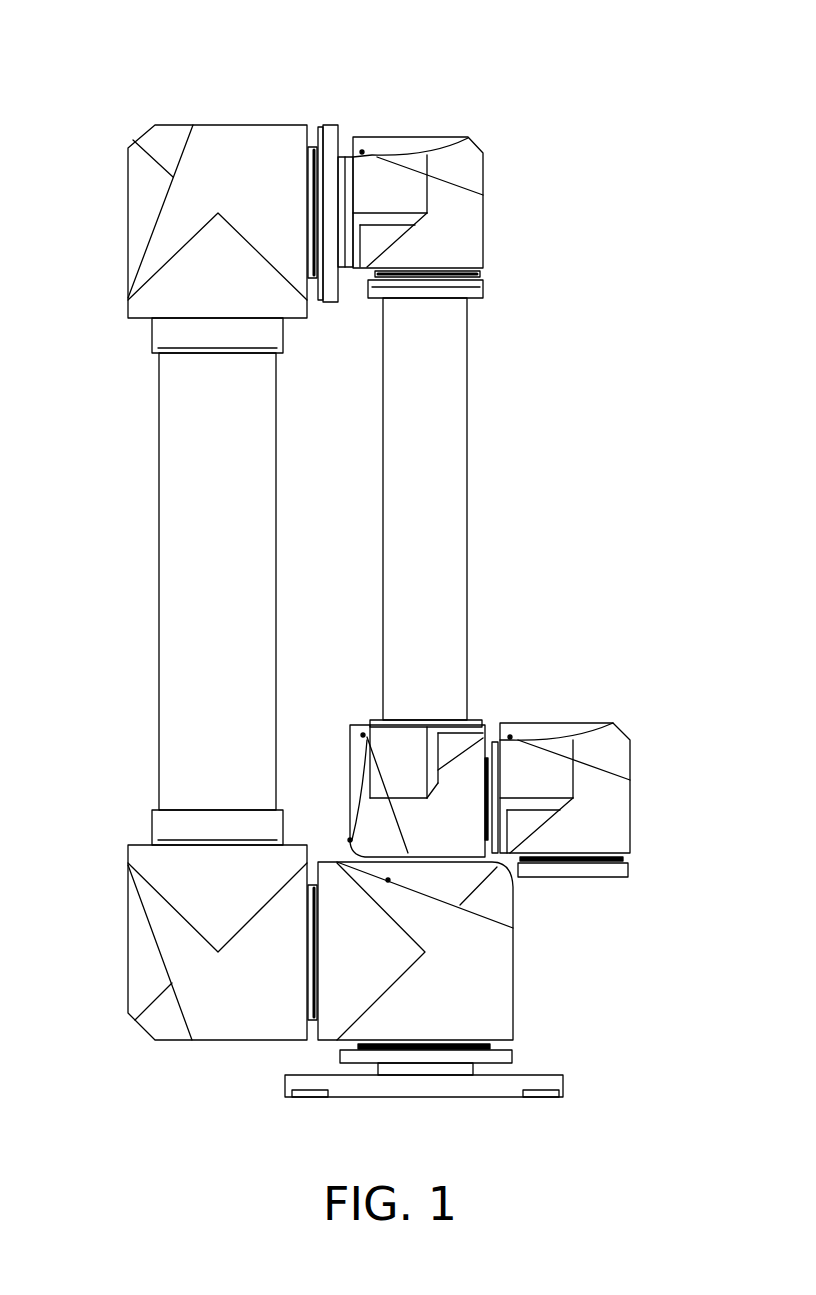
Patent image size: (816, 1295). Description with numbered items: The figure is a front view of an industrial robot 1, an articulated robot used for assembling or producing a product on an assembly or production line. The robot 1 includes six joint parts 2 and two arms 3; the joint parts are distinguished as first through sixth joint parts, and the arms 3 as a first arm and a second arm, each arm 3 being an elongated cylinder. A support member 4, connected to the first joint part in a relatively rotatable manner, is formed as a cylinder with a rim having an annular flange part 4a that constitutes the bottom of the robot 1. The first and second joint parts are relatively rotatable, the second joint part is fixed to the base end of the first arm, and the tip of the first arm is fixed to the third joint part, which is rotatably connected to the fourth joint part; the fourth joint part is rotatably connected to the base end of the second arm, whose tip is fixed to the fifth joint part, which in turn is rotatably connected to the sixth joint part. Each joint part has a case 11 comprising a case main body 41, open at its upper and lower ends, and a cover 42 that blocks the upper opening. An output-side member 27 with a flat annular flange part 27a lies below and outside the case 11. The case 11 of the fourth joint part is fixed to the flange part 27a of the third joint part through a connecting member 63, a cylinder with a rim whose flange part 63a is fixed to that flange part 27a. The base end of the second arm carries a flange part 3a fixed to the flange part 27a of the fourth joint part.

The industrial robot 1 is at (597, 83).
The joint part 2 is at (424, 567).
The arm 3 is at (159, 572).
The flange part 3a is at (483, 292).
The support member 4 is at (464, 1082).
The flange part 4a is at (563, 1085).
The case 11 is at (424, 567).
The case main body 41 is at (170, 125).
The cover 42 is at (128, 212).
The output-side member 27 is at (493, 567).
The flange part 27a is at (317, 123).
The connecting member 63 is at (357, 167).
The flange part 63a is at (330, 122).